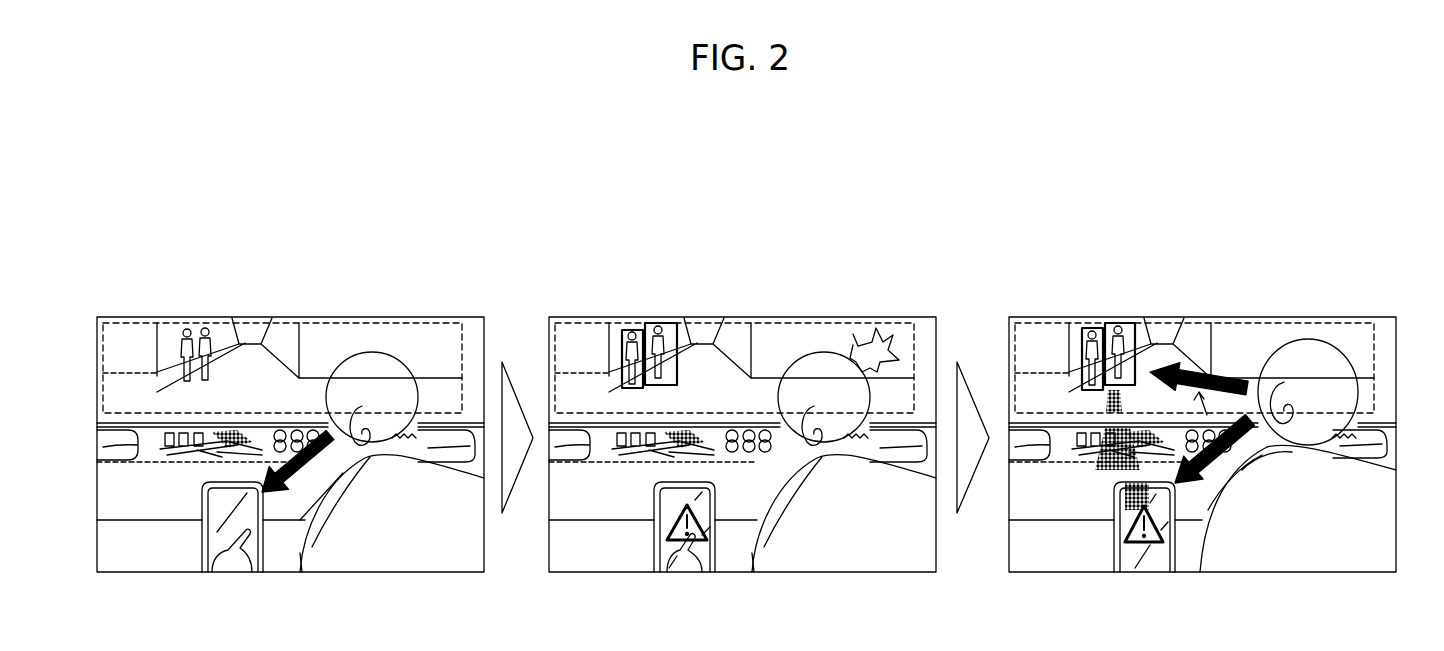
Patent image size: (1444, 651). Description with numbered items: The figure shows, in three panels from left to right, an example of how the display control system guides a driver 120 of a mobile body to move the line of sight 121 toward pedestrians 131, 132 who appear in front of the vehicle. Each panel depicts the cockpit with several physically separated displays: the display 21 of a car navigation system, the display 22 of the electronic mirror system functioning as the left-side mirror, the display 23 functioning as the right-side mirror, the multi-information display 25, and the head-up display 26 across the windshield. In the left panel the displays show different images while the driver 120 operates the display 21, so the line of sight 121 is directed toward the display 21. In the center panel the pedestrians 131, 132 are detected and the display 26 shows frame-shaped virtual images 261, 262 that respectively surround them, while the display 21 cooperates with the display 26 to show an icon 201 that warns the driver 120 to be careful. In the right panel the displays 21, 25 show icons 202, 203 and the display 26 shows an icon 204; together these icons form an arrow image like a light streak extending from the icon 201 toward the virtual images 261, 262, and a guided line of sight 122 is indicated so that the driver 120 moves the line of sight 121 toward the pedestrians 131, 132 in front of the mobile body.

The display 21 is at (215, 543).
The display 22 is at (115, 453).
The display 23 is at (442, 428).
The display 25 is at (160, 447).
The display 26 is at (138, 323).
The driver 120 is at (355, 370).
The line of sight 121 is at (262, 490).
The guided line of sight 122 is at (1199, 373).
The pedestrian 131 is at (178, 355).
The pedestrian 132 is at (213, 355).
The icon 201 is at (884, 518).
The icon 202 is at (1106, 500).
The icon 203 is at (1105, 460).
The icon 204 is at (1081, 400).
The virtual image 261 is at (832, 370).
The virtual image 262 is at (904, 367).